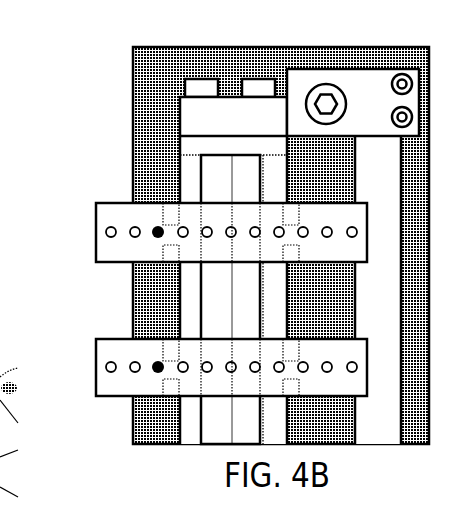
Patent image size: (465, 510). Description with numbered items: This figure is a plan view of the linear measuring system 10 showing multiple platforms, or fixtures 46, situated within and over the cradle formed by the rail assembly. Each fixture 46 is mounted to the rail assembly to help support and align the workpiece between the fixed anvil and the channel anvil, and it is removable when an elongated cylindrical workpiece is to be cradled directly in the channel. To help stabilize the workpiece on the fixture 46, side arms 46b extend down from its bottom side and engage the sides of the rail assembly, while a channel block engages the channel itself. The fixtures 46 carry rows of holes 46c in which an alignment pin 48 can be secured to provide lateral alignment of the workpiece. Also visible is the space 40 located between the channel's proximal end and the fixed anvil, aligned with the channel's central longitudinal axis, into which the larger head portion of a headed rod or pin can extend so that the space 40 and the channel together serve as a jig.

The linear measuring system 10 is at (79, 88).
The space 40 is at (218, 145).
The fixture 46 is at (96, 347).
The side arms 46b is at (292, 385).
The aperture of clamp bar 46c is at (158, 373).
The alignment pin 48 is at (155, 231).